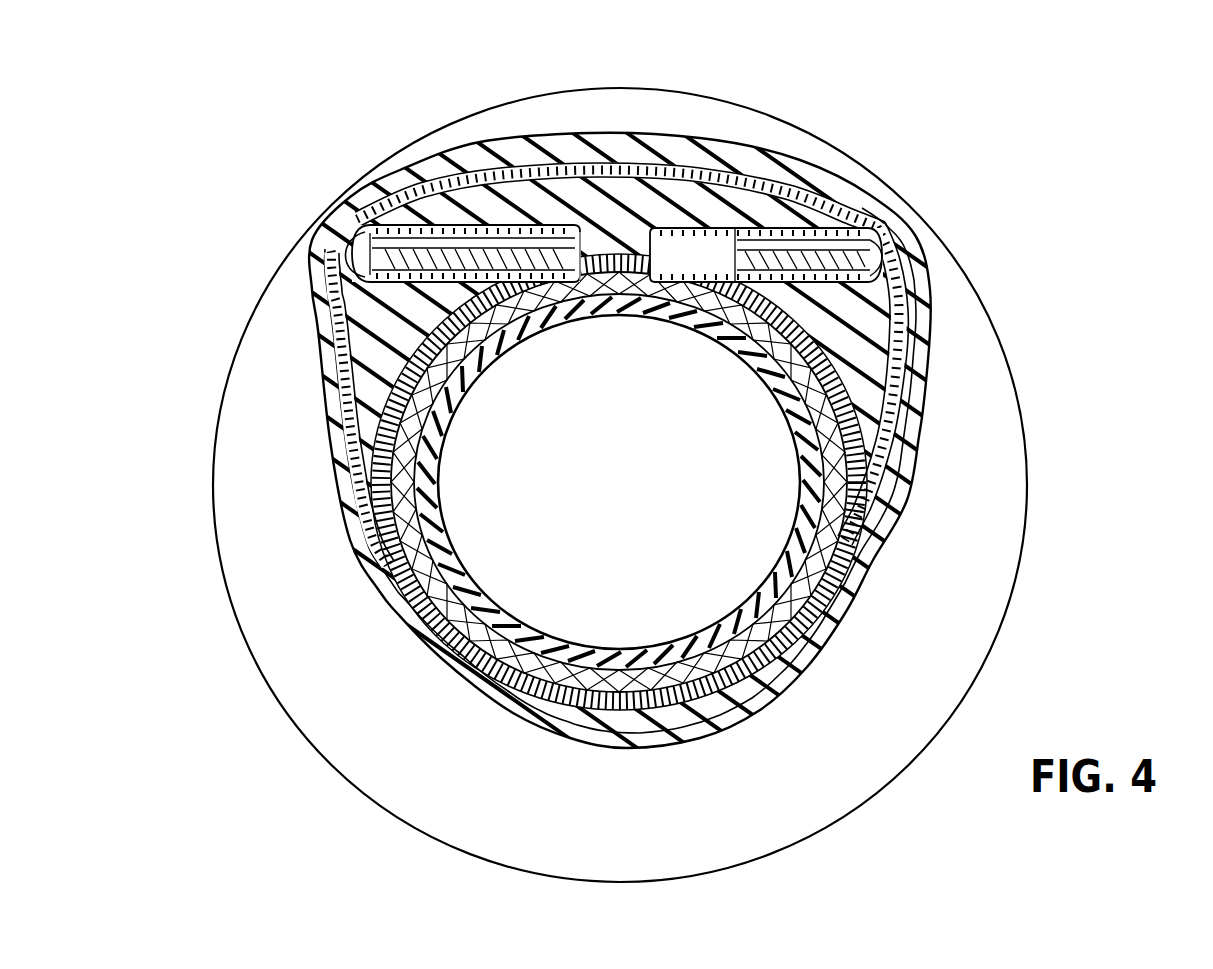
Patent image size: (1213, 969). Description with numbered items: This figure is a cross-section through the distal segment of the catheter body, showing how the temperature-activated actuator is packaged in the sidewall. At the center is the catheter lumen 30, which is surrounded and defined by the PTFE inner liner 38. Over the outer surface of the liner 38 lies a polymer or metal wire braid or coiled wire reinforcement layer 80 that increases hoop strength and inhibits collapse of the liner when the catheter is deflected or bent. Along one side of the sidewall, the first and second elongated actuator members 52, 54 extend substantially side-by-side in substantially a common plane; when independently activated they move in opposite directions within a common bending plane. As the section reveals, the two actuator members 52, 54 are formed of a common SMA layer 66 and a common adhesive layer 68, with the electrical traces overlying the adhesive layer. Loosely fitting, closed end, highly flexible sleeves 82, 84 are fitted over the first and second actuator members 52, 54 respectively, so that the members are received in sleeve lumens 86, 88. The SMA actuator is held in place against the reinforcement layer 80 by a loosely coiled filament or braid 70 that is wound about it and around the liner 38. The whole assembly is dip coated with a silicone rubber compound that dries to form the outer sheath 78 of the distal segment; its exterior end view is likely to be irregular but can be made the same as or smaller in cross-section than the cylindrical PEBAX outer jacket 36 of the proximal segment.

The catheter lumen 30 is at (634, 490).
The outer jacket 36 is at (1023, 550).
The inner liner 38 is at (455, 525).
The first elongated actuator member 52 is at (868, 262).
The second elongated actuator member 54 is at (368, 258).
The common SMA layer 66 is at (357, 232).
The common adhesive layer 68 is at (880, 250).
The loosely coiled filament or braid 70 is at (913, 435).
The outer sheath 78 is at (920, 335).
The reinforcement layer 80 is at (795, 382).
The first flexible sleeve 82 is at (783, 228).
The second flexible sleeve 84 is at (473, 226).
The first sleeve lumen 86 is at (705, 245).
The second sleeve lumen 88 is at (568, 228).